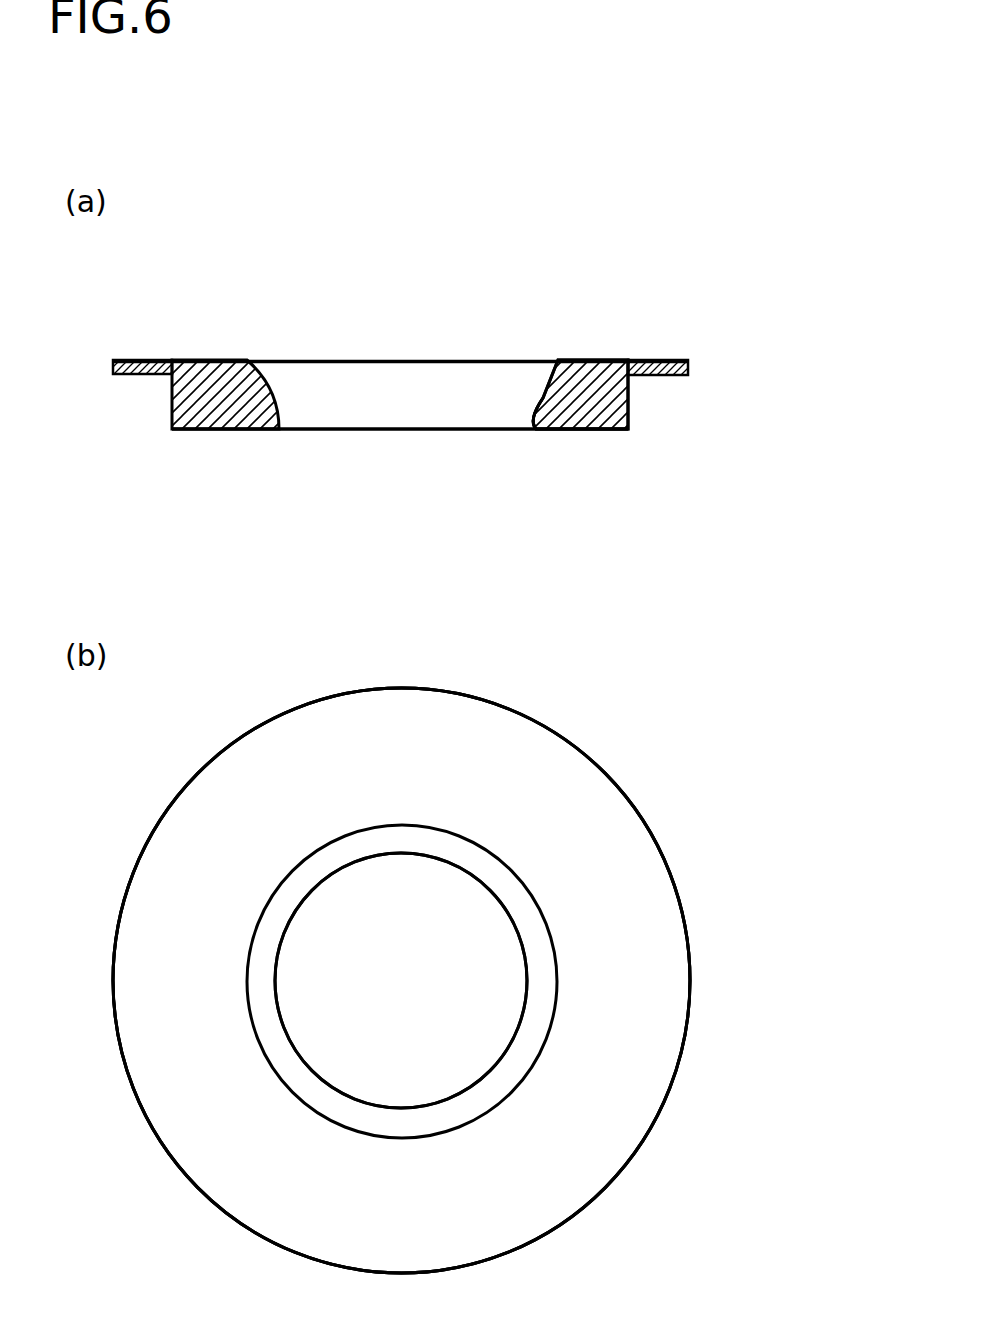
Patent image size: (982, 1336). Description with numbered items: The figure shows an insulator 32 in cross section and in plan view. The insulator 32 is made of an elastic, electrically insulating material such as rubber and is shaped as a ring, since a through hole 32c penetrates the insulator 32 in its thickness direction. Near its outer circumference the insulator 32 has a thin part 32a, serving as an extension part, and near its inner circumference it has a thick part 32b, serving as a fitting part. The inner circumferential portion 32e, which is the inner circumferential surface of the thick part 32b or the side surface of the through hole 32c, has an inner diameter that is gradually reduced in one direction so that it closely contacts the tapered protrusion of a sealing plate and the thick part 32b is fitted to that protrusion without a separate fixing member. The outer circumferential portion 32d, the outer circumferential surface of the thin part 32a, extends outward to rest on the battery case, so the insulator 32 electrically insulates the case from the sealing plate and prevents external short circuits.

The insulator 32 is at (588, 360).
The thin part 32a is at (153, 358).
The thick part 32b is at (630, 398).
The through hole 32c is at (268, 377).
The outer circumferential portion 32d is at (690, 368).
The inner circumferential portion 32e is at (540, 412).